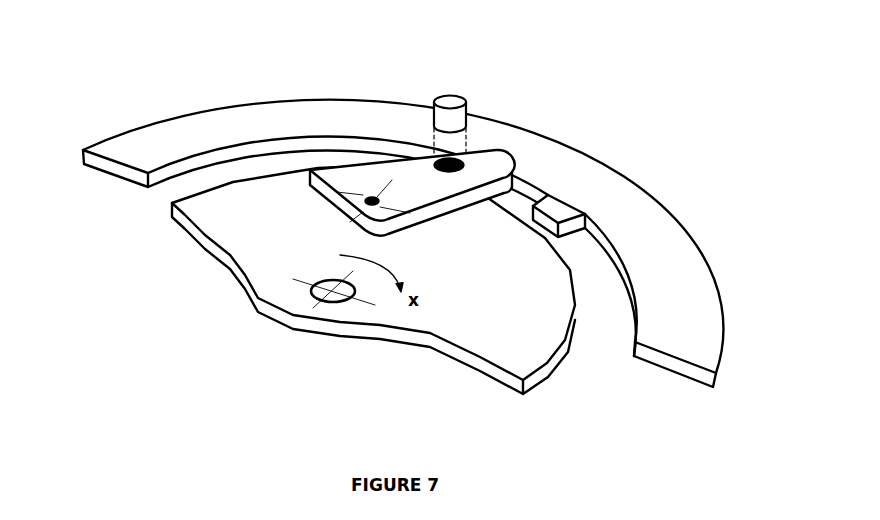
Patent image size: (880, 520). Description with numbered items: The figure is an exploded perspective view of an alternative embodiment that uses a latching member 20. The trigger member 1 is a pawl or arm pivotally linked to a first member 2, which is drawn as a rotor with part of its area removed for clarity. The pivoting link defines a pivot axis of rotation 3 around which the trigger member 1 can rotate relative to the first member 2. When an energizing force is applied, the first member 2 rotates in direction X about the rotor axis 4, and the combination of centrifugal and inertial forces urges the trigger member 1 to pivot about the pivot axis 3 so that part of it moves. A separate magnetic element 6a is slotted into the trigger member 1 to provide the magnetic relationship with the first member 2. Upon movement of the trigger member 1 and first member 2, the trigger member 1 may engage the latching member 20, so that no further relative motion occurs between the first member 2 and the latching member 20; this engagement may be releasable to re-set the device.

The trigger member 1 is at (494, 156).
The first member 2 is at (265, 260).
The pivot axis of rotation 3 is at (366, 197).
The rotor axis 4 is at (306, 306).
The magnetic element 6a is at (428, 99).
The latching member 20 is at (597, 181).